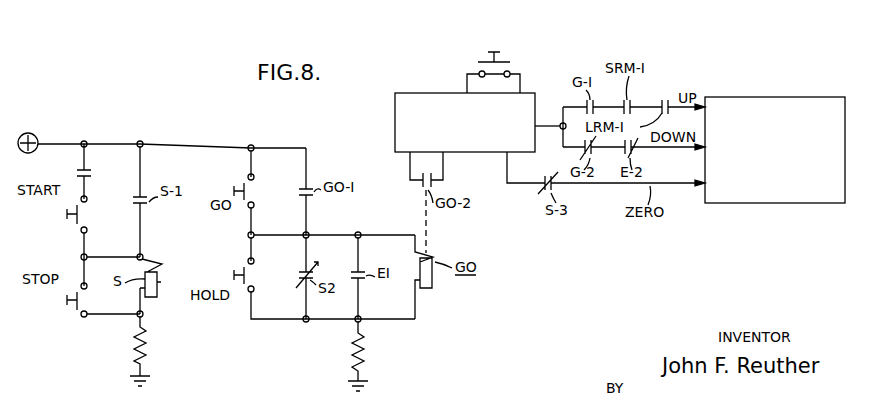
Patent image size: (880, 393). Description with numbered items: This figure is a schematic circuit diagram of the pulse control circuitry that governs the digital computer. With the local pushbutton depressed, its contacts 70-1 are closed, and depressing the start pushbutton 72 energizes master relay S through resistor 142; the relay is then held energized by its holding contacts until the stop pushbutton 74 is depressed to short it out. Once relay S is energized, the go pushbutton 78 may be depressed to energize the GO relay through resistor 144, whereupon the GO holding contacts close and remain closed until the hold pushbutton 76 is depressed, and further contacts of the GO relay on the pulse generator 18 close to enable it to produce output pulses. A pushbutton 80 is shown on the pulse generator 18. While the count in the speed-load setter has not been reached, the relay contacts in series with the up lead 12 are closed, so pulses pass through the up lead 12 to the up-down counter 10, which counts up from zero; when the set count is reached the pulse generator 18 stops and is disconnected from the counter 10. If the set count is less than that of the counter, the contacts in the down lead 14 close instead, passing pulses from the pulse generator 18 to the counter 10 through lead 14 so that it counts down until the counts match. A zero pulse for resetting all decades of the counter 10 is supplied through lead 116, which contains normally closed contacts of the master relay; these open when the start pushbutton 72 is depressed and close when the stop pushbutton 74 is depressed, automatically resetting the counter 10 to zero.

The up-down counter 10 is at (795, 97).
The up lead 12 is at (668, 100).
The down lead 14 is at (676, 150).
The pulse generator 18 is at (420, 93).
The contacts of local pushbutton 70-1 is at (92, 173).
The start pushbutton 72 is at (77, 221).
The stop pushbutton 74 is at (77, 306).
The hold pushbutton 76 is at (250, 275).
The go pushbutton 78 is at (250, 190).
The pulse generator pushbutton switch 80 is at (505, 63).
The zero lead 116 is at (507, 172).
The resistor 142 is at (146, 349).
The resistor 144 is at (365, 358).